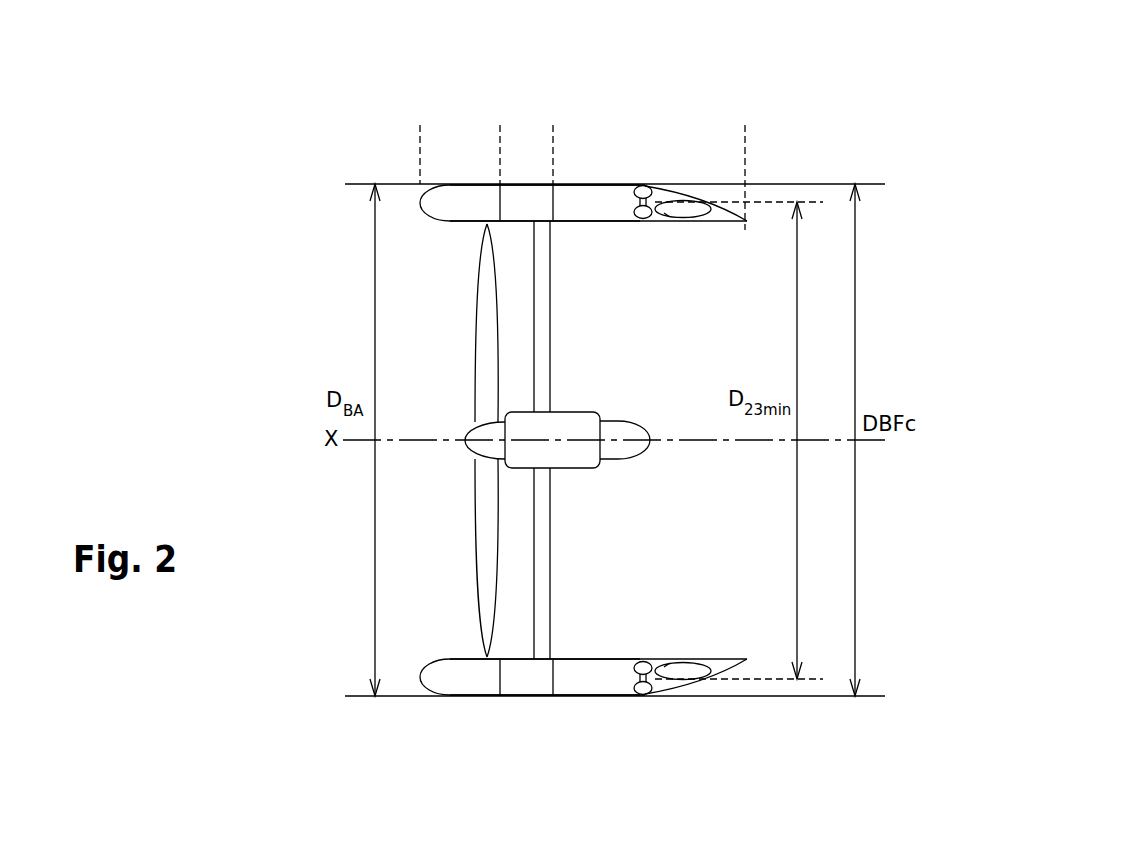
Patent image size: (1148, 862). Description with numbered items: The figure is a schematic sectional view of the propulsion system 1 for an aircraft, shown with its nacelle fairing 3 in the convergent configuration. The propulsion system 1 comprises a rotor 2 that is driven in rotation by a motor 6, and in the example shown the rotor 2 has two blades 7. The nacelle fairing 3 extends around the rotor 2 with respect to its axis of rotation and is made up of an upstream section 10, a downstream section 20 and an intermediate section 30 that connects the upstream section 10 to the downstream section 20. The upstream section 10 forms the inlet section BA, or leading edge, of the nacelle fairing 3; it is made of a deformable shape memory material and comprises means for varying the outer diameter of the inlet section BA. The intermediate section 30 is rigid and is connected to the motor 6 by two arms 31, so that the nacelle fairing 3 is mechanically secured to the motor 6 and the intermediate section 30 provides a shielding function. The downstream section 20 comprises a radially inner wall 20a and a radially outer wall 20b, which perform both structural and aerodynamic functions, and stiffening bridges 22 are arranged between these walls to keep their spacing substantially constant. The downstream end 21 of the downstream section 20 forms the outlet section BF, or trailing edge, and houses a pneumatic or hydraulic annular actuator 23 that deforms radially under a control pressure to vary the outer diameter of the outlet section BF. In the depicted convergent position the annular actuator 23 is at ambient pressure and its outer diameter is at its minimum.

The propulsion system 1 is at (790, 115).
The rotor 2 is at (523, 440).
The nacelle fairing 3 is at (712, 104).
The motor 6 is at (571, 461).
The blades 7 is at (488, 331).
The upstream section 10 is at (500, 128).
The downstream section 20 is at (745, 127).
The radially inner wall 20a is at (581, 221).
The radially outer wall 20b is at (572, 184).
The downstream end 21 is at (745, 227).
The stiffening bridges 22 is at (643, 186).
The annular actuator 23 is at (652, 220).
The intermediate section 30 is at (553, 128).
The arm 31 is at (540, 344).
The inlet section BA is at (416, 206).
The outlet section BF is at (750, 232).